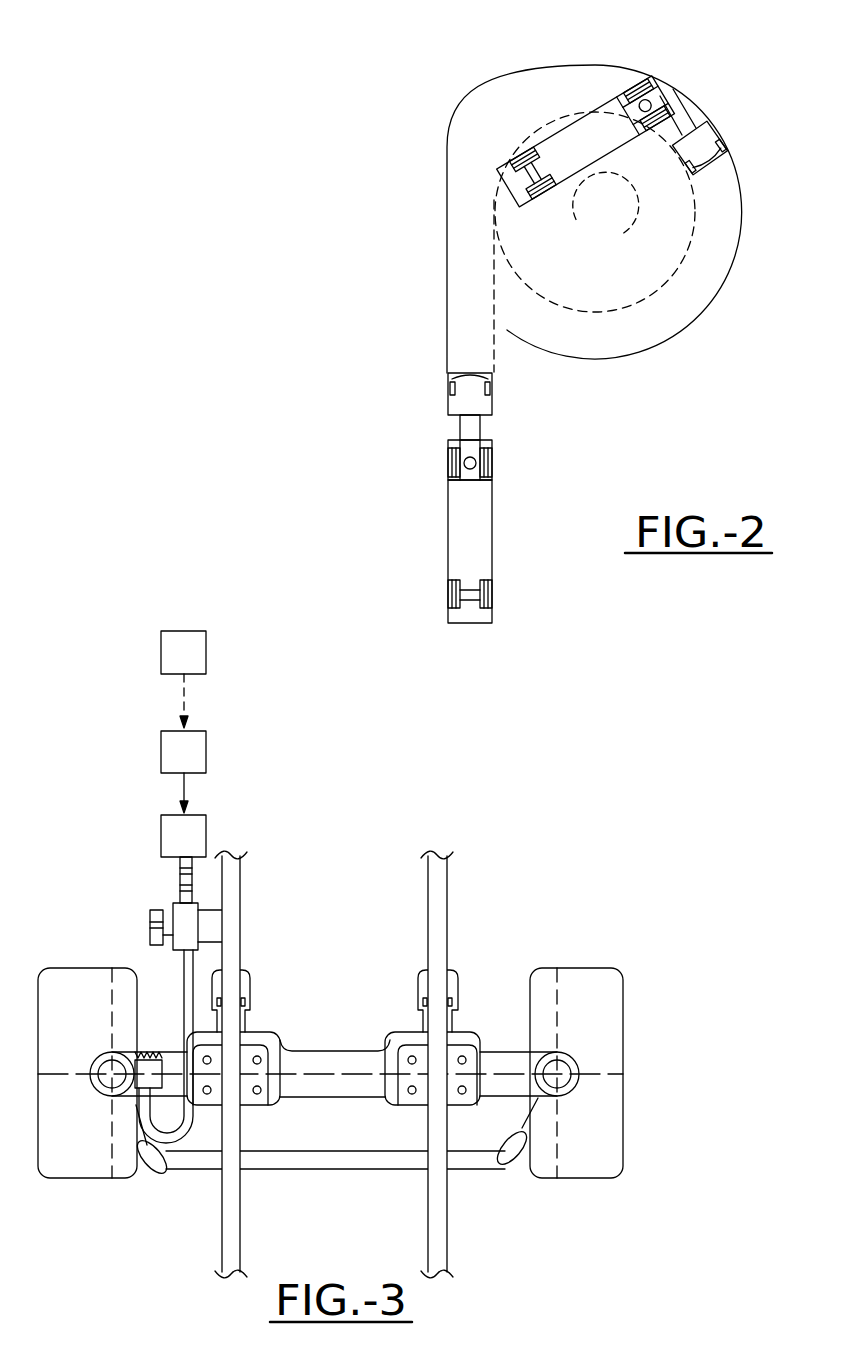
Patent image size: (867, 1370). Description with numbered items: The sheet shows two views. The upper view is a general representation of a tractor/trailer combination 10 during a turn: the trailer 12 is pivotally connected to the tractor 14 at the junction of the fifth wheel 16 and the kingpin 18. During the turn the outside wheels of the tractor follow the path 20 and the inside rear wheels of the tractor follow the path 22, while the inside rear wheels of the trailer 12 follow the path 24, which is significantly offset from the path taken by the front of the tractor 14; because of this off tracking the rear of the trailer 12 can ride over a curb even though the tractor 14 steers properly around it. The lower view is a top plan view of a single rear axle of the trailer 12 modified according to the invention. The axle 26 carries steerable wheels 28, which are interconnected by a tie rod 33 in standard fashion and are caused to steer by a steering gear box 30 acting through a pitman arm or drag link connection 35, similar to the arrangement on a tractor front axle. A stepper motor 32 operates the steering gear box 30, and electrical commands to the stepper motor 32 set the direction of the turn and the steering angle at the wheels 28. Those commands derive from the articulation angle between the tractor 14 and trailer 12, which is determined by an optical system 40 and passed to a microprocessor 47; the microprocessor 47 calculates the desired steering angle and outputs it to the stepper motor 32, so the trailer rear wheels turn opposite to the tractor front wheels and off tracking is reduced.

In FIG. 2, the tractor/trailer combination 10 is at (590, 87).
In FIG. 2, the trailer 12 is at (633, 152).
In FIG. 3, the trailer 12 is at (520, 898).
In FIG. 2, the tractor 14 is at (688, 117).
In FIG. 2, the fifth wheel 16 is at (677, 103).
In FIG. 2, the kingpin 18 is at (630, 93).
In FIG. 2, the path 20 is at (703, 308).
In FIG. 2, the path 22 is at (678, 267).
In FIG. 2, the path 24 is at (573, 180).
In FIG. 3, the axle 26 is at (333, 1073).
In FIG. 3, the steerable wheels 28 is at (80, 1172).
In FIG. 3, the steering gear box 30 is at (181, 910).
In FIG. 3, the stepper motor 32 is at (197, 832).
In FIG. 3, the tie rod 33 is at (345, 1158).
In FIG. 3, the pitman arm or drag link connection 35 is at (185, 1000).
In FIG. 3, the optical system 40 is at (188, 640).
In FIG. 3, the microprocessor 47 is at (193, 758).